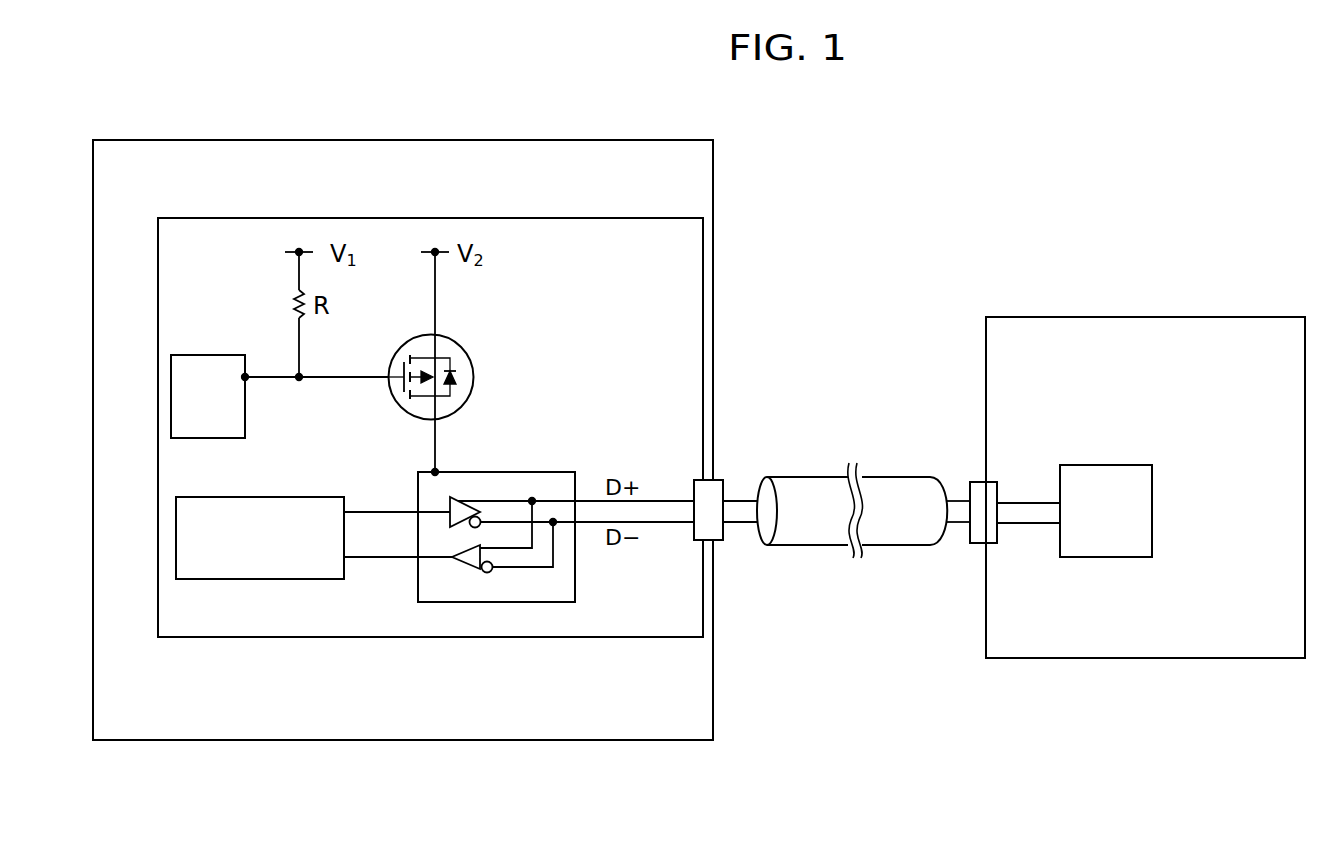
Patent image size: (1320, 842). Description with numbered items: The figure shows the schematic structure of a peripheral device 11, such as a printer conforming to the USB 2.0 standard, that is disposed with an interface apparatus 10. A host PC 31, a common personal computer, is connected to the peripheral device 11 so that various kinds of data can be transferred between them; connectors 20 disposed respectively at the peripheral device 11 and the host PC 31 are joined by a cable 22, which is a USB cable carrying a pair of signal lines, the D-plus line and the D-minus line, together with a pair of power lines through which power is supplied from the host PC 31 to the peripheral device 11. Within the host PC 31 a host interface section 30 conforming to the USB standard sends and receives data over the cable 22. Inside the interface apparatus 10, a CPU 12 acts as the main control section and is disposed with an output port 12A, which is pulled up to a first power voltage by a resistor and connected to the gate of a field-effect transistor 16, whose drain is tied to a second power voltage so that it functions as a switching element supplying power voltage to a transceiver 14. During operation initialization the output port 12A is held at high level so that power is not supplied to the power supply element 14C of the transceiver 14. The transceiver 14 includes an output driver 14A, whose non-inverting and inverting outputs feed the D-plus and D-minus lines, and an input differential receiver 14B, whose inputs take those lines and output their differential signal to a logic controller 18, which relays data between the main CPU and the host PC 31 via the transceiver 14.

The interface apparatus 10 is at (468, 215).
The peripheral device 11 is at (467, 138).
The CPU 12 is at (205, 355).
The output port 12A is at (247, 378).
The transceiver 14 is at (533, 472).
The output driver 14A is at (448, 518).
The input differential receiver 14B is at (452, 562).
The power supply element 14C is at (437, 472).
The field-effect transistor 16 is at (466, 352).
The logic controller 18 is at (243, 579).
The connectors 20 is at (723, 533).
The cable 22 is at (800, 545).
The host interface section 30 is at (1110, 462).
The host PC 31 is at (1150, 316).